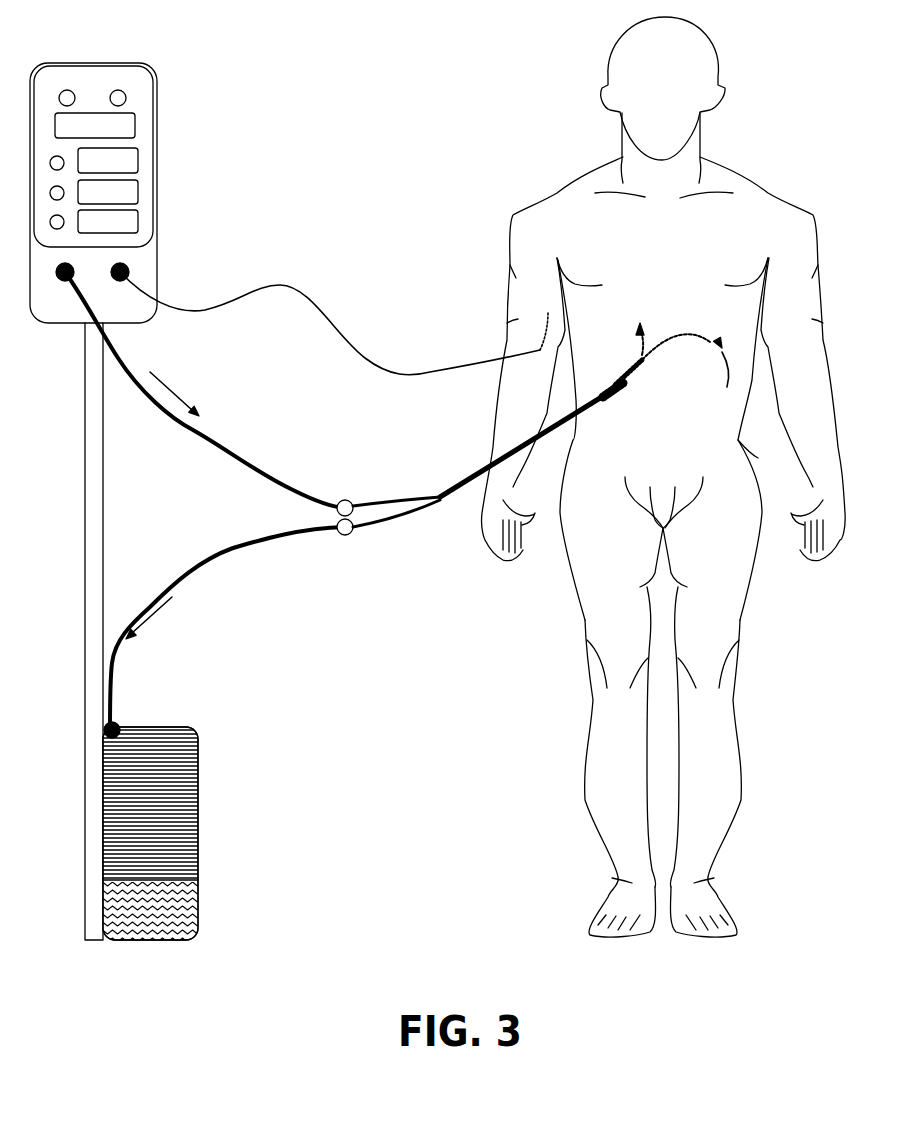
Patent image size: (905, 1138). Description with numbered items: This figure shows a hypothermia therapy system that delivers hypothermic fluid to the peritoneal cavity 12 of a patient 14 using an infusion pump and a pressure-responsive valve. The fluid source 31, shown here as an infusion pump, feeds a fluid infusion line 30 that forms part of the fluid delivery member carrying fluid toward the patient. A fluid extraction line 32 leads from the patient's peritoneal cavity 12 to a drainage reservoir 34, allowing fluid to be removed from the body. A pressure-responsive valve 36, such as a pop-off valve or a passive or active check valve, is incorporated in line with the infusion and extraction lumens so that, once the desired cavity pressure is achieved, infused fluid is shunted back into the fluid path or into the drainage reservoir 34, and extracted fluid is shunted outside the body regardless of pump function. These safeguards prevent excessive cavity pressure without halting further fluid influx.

The peritoneal cavity 12 is at (652, 427).
The patient 14 is at (748, 198).
The fluid infusion line 30 is at (232, 452).
The fluid source 31 is at (142, 148).
The fluid extraction line 32 is at (255, 547).
The drainage reservoir 34 is at (172, 828).
The pressure-responsive valve 36 is at (350, 535).